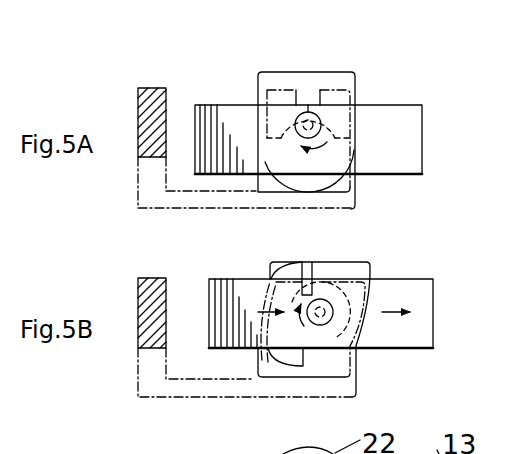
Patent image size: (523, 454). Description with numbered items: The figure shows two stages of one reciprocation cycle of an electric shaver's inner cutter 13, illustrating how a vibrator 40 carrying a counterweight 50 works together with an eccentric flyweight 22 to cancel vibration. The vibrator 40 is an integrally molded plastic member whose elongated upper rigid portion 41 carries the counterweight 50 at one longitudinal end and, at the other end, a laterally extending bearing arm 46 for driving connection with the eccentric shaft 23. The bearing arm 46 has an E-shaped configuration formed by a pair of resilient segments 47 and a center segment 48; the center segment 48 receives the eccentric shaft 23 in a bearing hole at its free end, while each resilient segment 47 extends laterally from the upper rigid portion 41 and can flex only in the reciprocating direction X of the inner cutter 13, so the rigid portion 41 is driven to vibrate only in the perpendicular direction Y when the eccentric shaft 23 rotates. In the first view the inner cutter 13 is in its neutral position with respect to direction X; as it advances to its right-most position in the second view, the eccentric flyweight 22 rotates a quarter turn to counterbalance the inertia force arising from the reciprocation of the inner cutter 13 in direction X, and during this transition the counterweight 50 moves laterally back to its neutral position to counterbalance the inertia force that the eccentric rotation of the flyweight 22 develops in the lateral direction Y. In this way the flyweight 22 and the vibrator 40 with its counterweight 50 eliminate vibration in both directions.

In FIG. 5A, the inner cutter 13 is at (422, 106).
In FIG. 5B, the inner cutter 13 is at (433, 279).
In FIG. 5A, the eccentric flyweight 22 is at (333, 181).
In FIG. 5B, the eccentric flyweight 22 is at (290, 356).
In FIG. 5A, the eccentric shaft 23 is at (311, 111).
In FIG. 5B, the eccentric shaft 23 is at (322, 327).
In FIG. 5A, the vibrator 40 is at (136, 209).
In FIG. 5B, the vibrator 40 is at (136, 398).
In FIG. 5A, the upper rigid portion 41 is at (228, 200).
In FIG. 5B, the upper rigid portion 41 is at (223, 393).
In FIG. 5A, the bearing arm 46 is at (356, 72).
In FIG. 5B, the bearing arm 46 is at (372, 263).
In FIG. 5A, the resilient segments 47 is at (257, 92).
In FIG. 5B, the resilient segments 47 is at (258, 358).
In FIG. 5A, the center segment 48 is at (294, 100).
In FIG. 5B, the center segment 48 is at (302, 283).
In FIG. 5A, the counterweight 50 is at (145, 110).
In FIG. 5B, the counterweight 50 is at (145, 292).